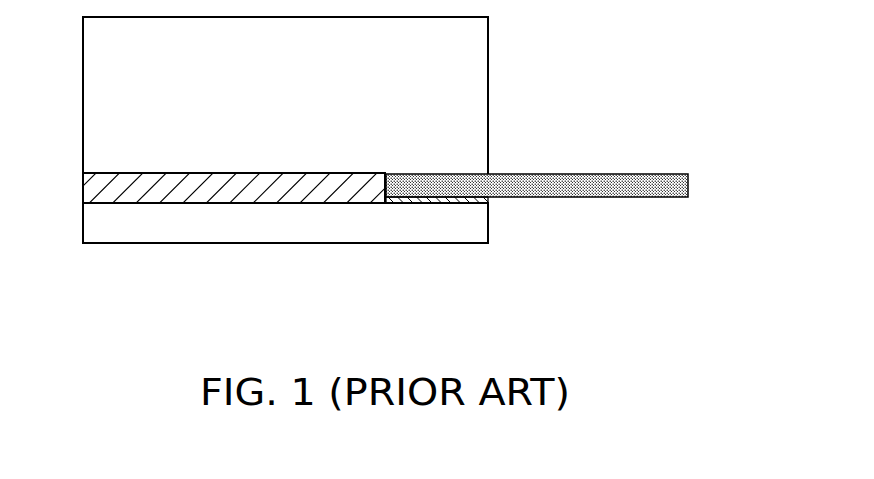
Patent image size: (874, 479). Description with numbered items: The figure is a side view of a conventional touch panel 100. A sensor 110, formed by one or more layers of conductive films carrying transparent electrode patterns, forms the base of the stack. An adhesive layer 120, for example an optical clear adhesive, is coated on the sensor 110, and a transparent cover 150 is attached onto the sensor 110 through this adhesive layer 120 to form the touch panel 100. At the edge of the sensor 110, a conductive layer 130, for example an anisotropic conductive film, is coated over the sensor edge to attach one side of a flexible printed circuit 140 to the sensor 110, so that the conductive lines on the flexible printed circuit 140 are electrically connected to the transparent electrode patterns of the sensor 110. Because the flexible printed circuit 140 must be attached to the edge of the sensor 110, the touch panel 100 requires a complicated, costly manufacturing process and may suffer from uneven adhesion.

The touch panel 100 is at (727, 311).
The sensor 110 is at (102, 224).
The adhesive layer 120 is at (102, 187).
The conductive layer 130 is at (488, 201).
The flexible printed circuit 140 is at (688, 188).
The transparent cover 150 is at (102, 93).